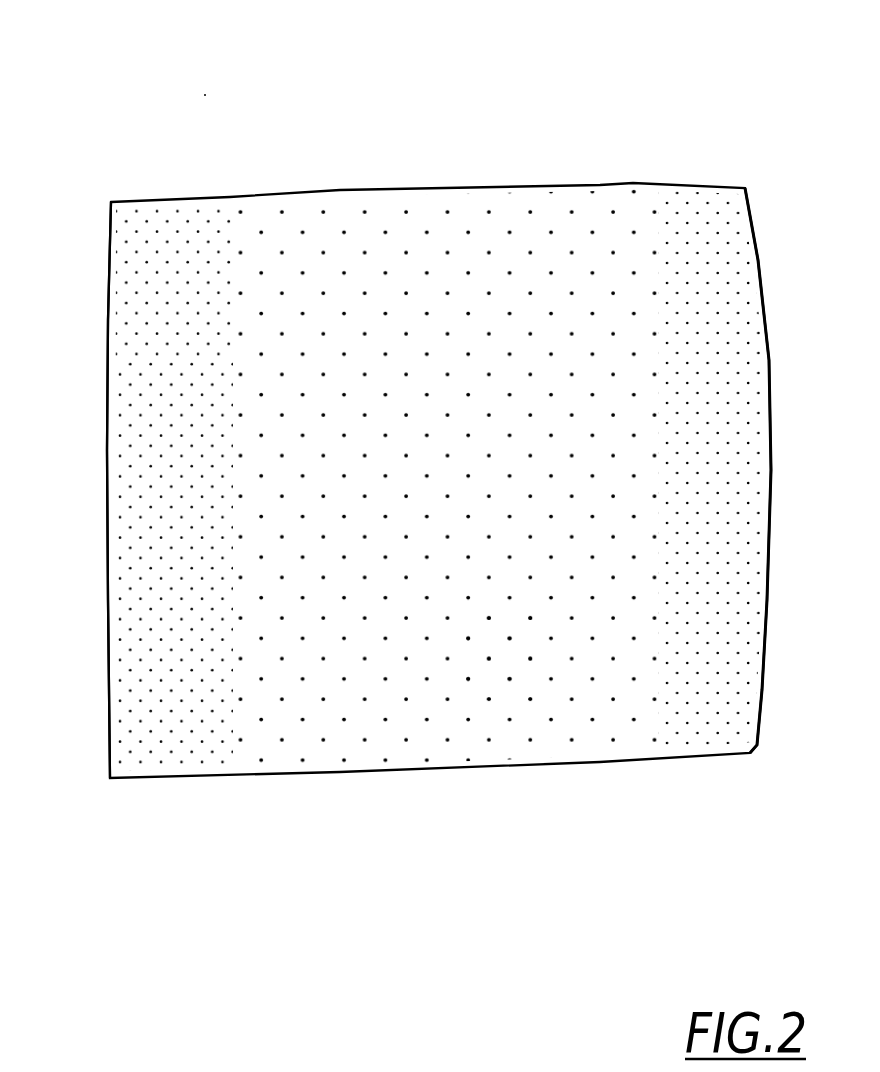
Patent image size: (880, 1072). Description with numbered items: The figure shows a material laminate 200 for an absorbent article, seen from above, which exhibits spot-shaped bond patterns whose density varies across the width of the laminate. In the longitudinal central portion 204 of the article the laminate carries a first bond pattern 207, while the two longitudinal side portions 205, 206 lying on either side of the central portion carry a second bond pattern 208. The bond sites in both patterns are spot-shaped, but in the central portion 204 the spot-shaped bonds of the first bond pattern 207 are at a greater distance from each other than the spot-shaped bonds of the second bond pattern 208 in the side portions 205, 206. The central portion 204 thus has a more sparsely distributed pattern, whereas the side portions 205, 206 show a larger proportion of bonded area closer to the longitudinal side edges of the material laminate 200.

The material laminate 200 is at (634, 138).
The longitudinal central portion 204 is at (432, 707).
The longitudinal side portion 205 is at (162, 750).
The longitudinal side portion 206 is at (688, 718).
The first bond pattern 207 is at (495, 637).
The second bond pattern 208 is at (130, 712).